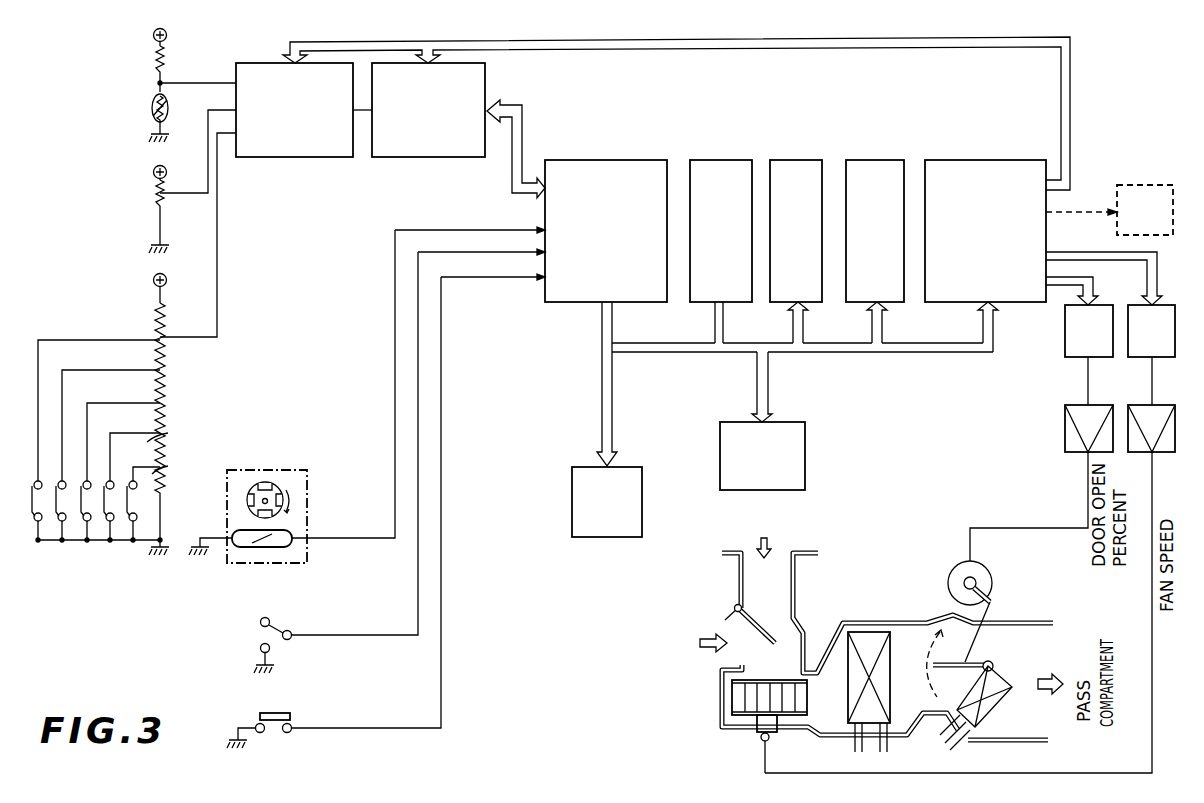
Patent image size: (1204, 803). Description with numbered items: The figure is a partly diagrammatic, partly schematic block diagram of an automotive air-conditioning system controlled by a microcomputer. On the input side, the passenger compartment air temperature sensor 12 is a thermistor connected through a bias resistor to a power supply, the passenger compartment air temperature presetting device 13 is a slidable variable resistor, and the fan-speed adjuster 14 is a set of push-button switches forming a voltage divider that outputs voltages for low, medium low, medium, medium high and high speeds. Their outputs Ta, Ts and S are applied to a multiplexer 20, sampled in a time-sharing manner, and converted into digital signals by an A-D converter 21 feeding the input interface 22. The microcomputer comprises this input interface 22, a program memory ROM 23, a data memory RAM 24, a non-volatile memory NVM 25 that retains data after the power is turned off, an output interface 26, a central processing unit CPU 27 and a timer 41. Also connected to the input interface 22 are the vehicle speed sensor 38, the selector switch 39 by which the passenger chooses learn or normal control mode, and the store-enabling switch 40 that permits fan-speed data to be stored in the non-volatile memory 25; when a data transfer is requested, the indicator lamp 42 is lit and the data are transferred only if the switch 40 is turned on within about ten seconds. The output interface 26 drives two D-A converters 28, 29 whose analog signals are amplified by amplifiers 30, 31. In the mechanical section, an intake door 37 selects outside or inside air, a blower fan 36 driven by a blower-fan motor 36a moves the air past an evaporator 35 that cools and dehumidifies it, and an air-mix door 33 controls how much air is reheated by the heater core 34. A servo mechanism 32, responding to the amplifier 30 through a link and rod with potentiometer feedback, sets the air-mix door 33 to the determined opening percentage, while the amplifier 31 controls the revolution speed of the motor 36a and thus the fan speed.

The passenger compartment air temperature sensor 12 is at (150, 80).
The passenger compartment air temperature presetting device 13 is at (150, 190).
The fan-speed adjuster 14 is at (90, 550).
The multiplexer 20 is at (279, 64).
The A/D converter 21 is at (468, 63).
The input interface 22 is at (602, 160).
The program memory (ROM) 23 is at (705, 160).
The data memory (RAM) 24 is at (789, 160).
The non-volatile memory (NVM) 25 is at (866, 160).
The output interface 26 is at (962, 160).
The central processing unit (CPU) 27 is at (805, 447).
The D-A converter 28 is at (1065, 322).
The D-A converter 29 is at (1130, 357).
The amplifier 30 is at (1065, 418).
The amplifier 31 is at (1171, 405).
The servo mechanism 32 is at (992, 588).
The air-mix door 33 is at (985, 660).
The heater core 34 is at (1000, 706).
The evaporator 35 is at (878, 632).
The blower fan 36 is at (735, 700).
The blower-fan motor 36a is at (757, 733).
The intake door 37 is at (760, 615).
The vehicle speed sensor 38 is at (290, 470).
The selector switch 39 is at (278, 628).
The store-enabling switch 40 is at (276, 738).
The timer 41 is at (642, 500).
The indicator lamp 42 is at (1147, 185).